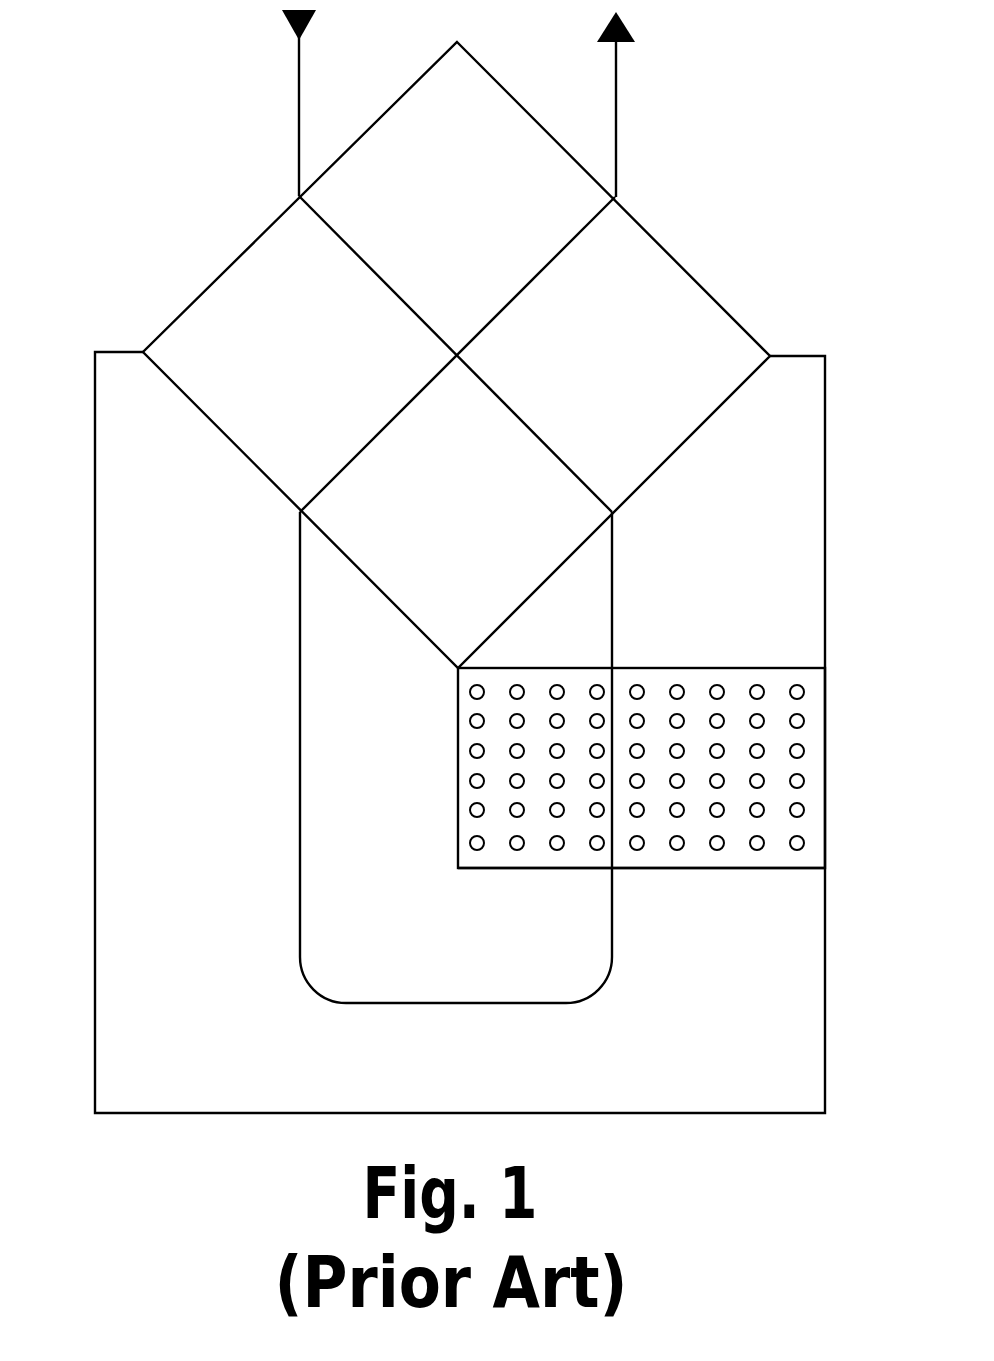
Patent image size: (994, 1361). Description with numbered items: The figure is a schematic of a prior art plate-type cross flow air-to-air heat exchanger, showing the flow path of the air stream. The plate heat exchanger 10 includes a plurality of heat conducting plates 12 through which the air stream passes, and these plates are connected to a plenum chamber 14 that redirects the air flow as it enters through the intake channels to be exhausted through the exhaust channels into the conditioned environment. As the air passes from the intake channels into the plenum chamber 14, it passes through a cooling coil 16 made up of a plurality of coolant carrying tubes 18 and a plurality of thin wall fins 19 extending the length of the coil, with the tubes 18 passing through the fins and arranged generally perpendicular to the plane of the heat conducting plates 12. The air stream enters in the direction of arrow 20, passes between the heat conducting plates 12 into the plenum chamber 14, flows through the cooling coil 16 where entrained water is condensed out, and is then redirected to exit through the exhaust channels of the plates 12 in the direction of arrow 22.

The plate heat exchanger 10 is at (156, 174).
The heat conducting plates 12 is at (181, 309).
The plenum chamber 14 is at (95, 792).
The cooling coil 16 is at (843, 676).
The coolant carrying conduits or tubes 18 is at (804, 752).
The thin wall fins 19 is at (810, 822).
The arrow 20 is at (296, 45).
The arrow 22 is at (621, 47).